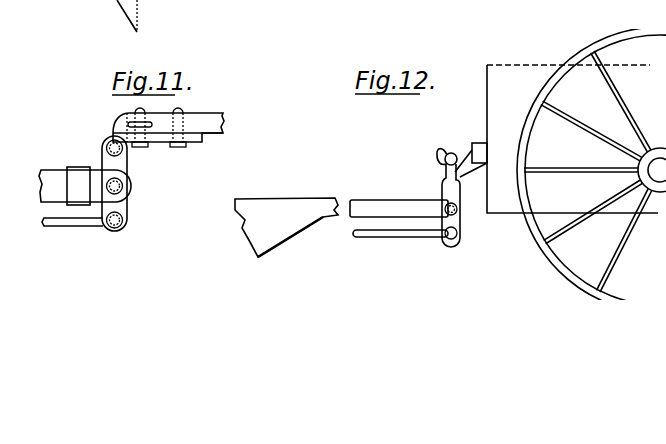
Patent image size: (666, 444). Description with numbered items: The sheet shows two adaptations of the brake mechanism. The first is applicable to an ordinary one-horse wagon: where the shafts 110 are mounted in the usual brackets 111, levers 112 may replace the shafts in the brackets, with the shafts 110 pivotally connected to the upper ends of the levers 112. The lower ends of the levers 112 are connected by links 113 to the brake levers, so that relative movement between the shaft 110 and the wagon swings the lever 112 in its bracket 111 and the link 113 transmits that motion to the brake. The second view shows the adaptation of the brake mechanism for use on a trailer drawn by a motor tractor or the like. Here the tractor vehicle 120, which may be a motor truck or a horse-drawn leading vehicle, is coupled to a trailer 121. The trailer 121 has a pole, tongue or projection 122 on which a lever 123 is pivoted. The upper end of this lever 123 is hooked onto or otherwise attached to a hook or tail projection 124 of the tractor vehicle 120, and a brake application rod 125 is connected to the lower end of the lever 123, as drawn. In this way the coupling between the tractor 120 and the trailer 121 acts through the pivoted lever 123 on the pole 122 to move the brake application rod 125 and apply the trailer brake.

In FIG. 11, the shaft 110 is at (206, 94).
In FIG. 11, the bracket 111 is at (102, 175).
In FIG. 11, the lever 112 is at (130, 200).
In FIG. 11, the link 113 is at (67, 223).
In FIG. 12, the tractor vehicle 120 is at (513, 213).
In FIG. 12, the trailer 121 is at (280, 210).
In FIG. 12, the pole 122 is at (385, 205).
In FIG. 12, the lever 123 is at (462, 222).
In FIG. 12, the hook or tail projection 124 is at (442, 157).
In FIG. 12, the brake application rod 125 is at (415, 237).